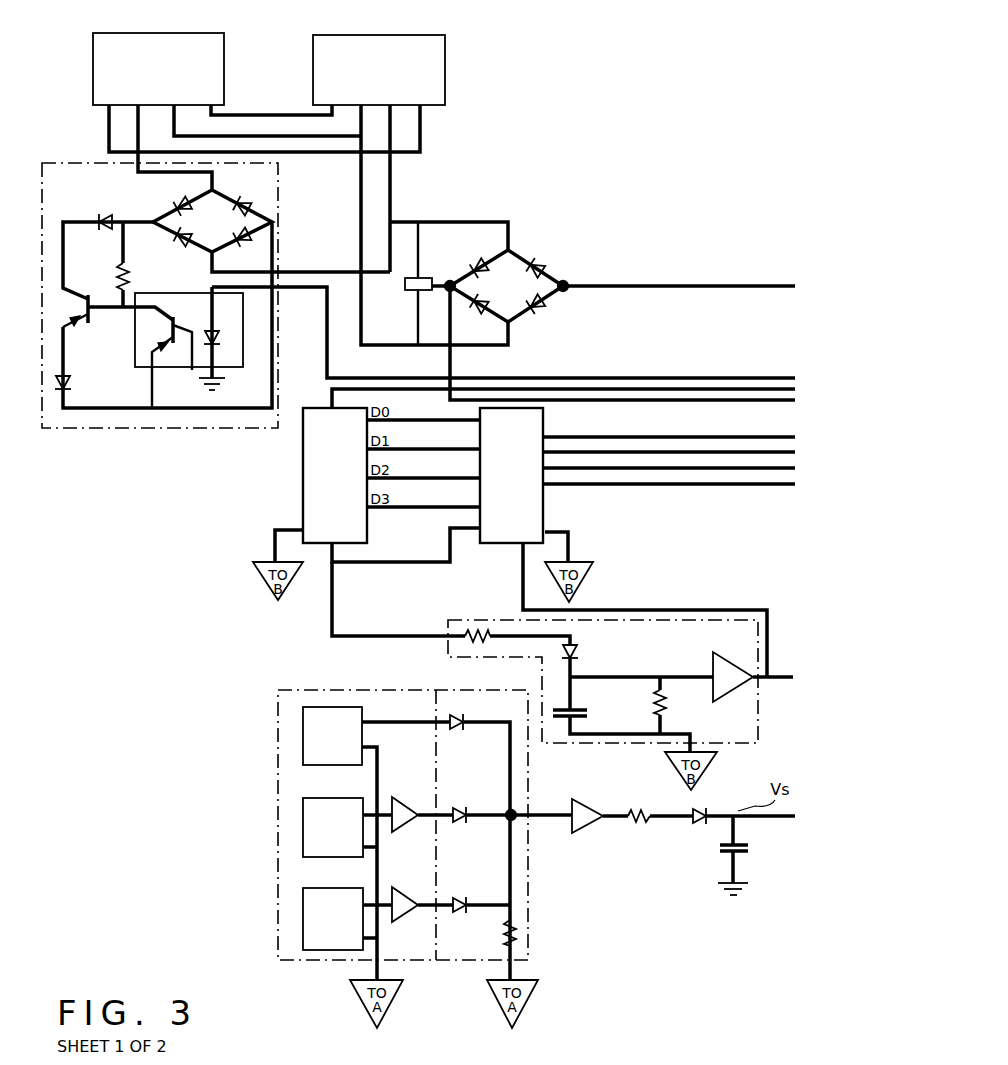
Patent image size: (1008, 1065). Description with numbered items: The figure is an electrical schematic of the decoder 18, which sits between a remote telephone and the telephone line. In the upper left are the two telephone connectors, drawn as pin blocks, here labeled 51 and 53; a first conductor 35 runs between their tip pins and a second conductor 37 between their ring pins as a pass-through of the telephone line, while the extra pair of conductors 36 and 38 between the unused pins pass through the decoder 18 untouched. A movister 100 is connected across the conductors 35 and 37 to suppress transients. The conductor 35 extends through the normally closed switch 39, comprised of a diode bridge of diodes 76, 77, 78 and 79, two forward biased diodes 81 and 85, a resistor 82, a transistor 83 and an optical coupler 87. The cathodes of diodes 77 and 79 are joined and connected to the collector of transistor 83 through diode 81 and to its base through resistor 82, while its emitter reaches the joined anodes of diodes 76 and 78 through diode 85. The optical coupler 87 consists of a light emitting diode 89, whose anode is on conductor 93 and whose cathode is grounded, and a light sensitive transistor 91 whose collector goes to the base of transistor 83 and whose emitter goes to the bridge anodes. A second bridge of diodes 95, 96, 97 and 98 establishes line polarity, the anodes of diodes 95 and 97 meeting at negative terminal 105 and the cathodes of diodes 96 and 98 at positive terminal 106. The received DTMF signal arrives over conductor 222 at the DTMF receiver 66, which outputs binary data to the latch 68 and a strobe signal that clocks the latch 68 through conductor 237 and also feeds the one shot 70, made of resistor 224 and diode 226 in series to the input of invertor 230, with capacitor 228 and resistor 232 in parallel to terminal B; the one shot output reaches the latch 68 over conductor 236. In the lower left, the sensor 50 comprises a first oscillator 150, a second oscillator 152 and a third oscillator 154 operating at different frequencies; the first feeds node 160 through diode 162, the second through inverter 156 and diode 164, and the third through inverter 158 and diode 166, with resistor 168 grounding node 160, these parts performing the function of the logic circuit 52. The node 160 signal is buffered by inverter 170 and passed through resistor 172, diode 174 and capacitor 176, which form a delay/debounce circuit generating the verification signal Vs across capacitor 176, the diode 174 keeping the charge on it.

The first terminal block 51 is at (190, 33).
The second terminal block 53 is at (410, 35).
The conductor 38 is at (268, 115).
The conductor 36 is at (300, 154).
The first conductor 35 is at (136, 174).
The second conductor 37 is at (335, 140).
The normally closed switch 39 is at (195, 430).
The decoder 18 is at (115, 562).
The diode 77 is at (176, 201).
The diode 76 is at (246, 199).
The diode 79 is at (180, 246).
The diode 78 is at (238, 246).
The diode 81 is at (100, 214).
The resistor 82 is at (115, 268).
The transistor 83 is at (86, 325).
The light sensitive transistor 91 is at (175, 326).
The light emitting diode 89 is at (220, 330).
The optical coupler 87 is at (237, 368).
The diode 85 is at (74, 386).
The conductor 93 is at (306, 290).
The diode 95 is at (470, 260).
The diode 96 is at (532, 256).
The diode 97 is at (478, 312).
The diode 98 is at (535, 318).
The negative terminal 105 is at (447, 290).
The positive terminal 106 is at (566, 292).
The movister 100 is at (405, 286).
The conductor 222 is at (408, 392).
The DTMF receiver 66 is at (303, 505).
The latch 68 is at (545, 498).
The conductor 237 is at (382, 564).
The conductor 236 is at (523, 570).
The one shot 70 is at (735, 750).
The resistor 224 is at (473, 626).
The diode 226 is at (580, 655).
The capacitor 228 is at (580, 708).
The resistor 232 is at (667, 706).
The invertor 230 is at (730, 695).
The sensor 50 is at (285, 690).
The logic circuit 52 is at (448, 690).
The first oscillator 150 is at (362, 713).
The second oscillator 152 is at (325, 798).
The third oscillator 154 is at (325, 888).
The diode 162 is at (458, 728).
The inverter 156 is at (410, 808).
The diode 164 is at (465, 806).
The node 160 is at (520, 805).
The inverter 158 is at (412, 898).
The diode 166 is at (462, 897).
The resistor 168 is at (503, 935).
The inverter 170 is at (590, 805).
The resistor 172 is at (638, 826).
The diode 174 is at (698, 828).
The capacitor 176 is at (722, 852).